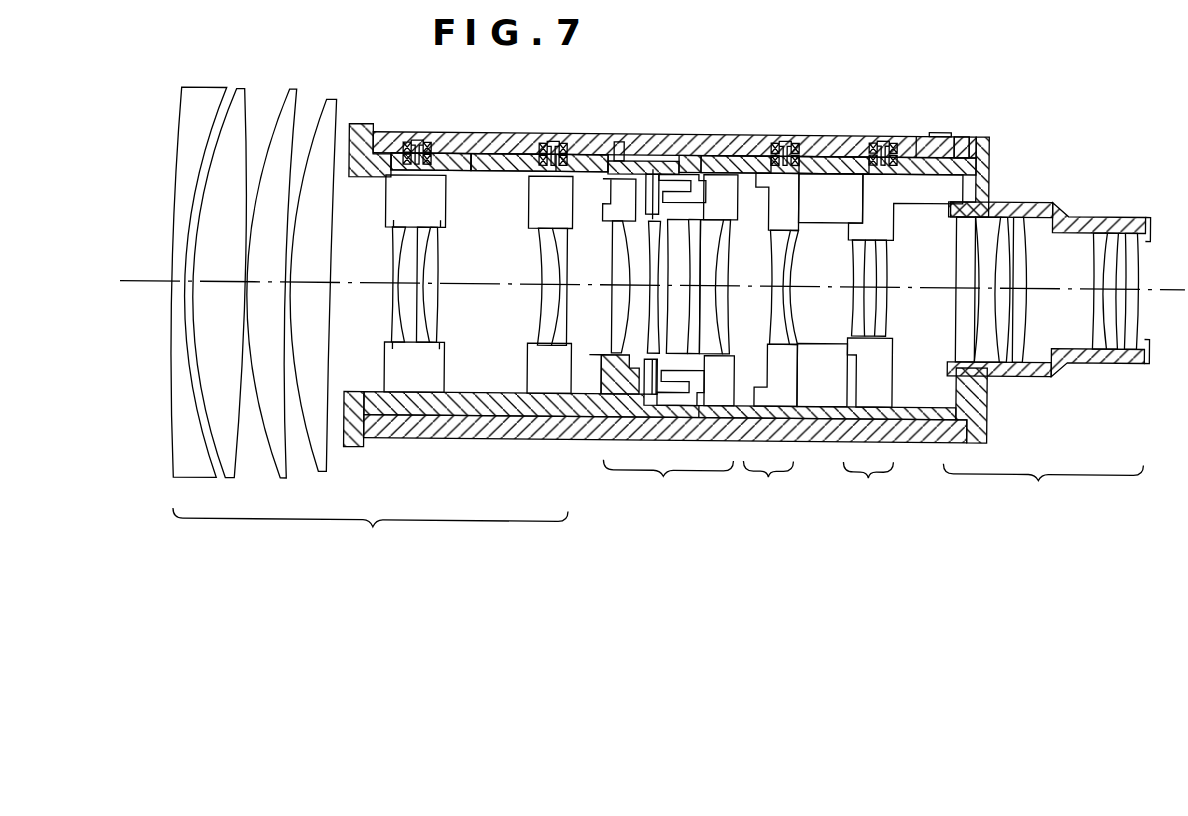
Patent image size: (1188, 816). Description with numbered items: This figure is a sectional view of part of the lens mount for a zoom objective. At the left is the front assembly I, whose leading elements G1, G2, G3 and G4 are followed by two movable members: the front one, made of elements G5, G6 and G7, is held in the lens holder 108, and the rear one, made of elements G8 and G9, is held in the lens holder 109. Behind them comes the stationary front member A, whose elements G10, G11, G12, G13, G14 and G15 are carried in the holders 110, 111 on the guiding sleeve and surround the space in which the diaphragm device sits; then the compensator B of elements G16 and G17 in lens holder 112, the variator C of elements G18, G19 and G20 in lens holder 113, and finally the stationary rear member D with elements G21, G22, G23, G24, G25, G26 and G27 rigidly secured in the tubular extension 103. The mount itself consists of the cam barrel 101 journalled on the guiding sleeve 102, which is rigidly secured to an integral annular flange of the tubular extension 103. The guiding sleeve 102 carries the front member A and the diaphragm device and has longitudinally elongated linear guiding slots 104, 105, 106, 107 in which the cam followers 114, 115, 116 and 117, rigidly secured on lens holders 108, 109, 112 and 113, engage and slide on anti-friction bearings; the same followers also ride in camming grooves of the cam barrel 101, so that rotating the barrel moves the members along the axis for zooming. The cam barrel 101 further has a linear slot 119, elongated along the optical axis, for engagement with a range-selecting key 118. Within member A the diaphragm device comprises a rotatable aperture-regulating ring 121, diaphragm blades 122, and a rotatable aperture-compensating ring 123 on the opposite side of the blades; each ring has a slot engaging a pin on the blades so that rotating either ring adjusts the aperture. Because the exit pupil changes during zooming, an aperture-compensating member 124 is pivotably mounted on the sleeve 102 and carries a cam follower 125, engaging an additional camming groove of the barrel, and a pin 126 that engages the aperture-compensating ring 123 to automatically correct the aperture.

The lens element G1 is at (198, 100).
The lens element G2 is at (236, 100).
The lens element G3 is at (291, 95).
The lens element G4 is at (328, 100).
The lens element G5 is at (395, 236).
The lens element G6 is at (430, 241).
The lens element G7 is at (435, 273).
The lens element G8 is at (542, 237).
The lens element G9 is at (560, 267).
The lens element G10 is at (628, 309).
The lens element G11 is at (640, 287).
The lens element G12 is at (700, 234).
The lens element G13 is at (695, 288).
The lens element G14 is at (720, 323).
The lens element G15 is at (710, 256).
The lens element G16 is at (788, 250).
The lens element G17 is at (786, 312).
The lens element G18 is at (858, 261).
The lens element G19 is at (872, 257).
The lens element G20 is at (880, 321).
The lens element G21 is at (957, 232).
The lens element G22 is at (988, 226).
The lens element G23 is at (997, 356).
The lens element G24 is at (1022, 251).
The lens element G25 is at (1096, 318).
The lens element G26 is at (1112, 291).
The lens element G27 is at (1132, 270).
The cam barrel 101 is at (845, 140).
The guiding sleeve 102 is at (482, 163).
The tubular extension 103 is at (985, 172).
The linear guiding slot 104 is at (443, 163).
The linear guiding slot 105 is at (528, 150).
The linear guiding slot 106 is at (808, 150).
The linear guiding slot 107 is at (853, 150).
The lens holder 108 is at (433, 205).
The lens holder 109 is at (545, 202).
The lens frame 110 is at (605, 213).
The lens frame 111 is at (722, 180).
The lens holder 112 is at (790, 197).
The lens holder 113 is at (888, 197).
The cam follower 114 is at (416, 140).
The cam follower 115 is at (551, 140).
The cam follower 116 is at (784, 138).
The cam follower 117 is at (882, 137).
The range-selecting key 118 is at (943, 126).
The linear slot 119 is at (962, 140).
The aperture-regulating ring 121 is at (703, 150).
The diaphragm blades 122 is at (651, 160).
The aperture-compensating ring 123 is at (652, 165).
The aperture-compensating member 124 is at (602, 158).
The cam follower 125 is at (618, 140).
The pin 126 is at (683, 160).
The front assembly I is at (370, 531).
The front member A is at (668, 480).
The compensator B is at (768, 479).
The variator C is at (868, 480).
The rear member D is at (1043, 484).